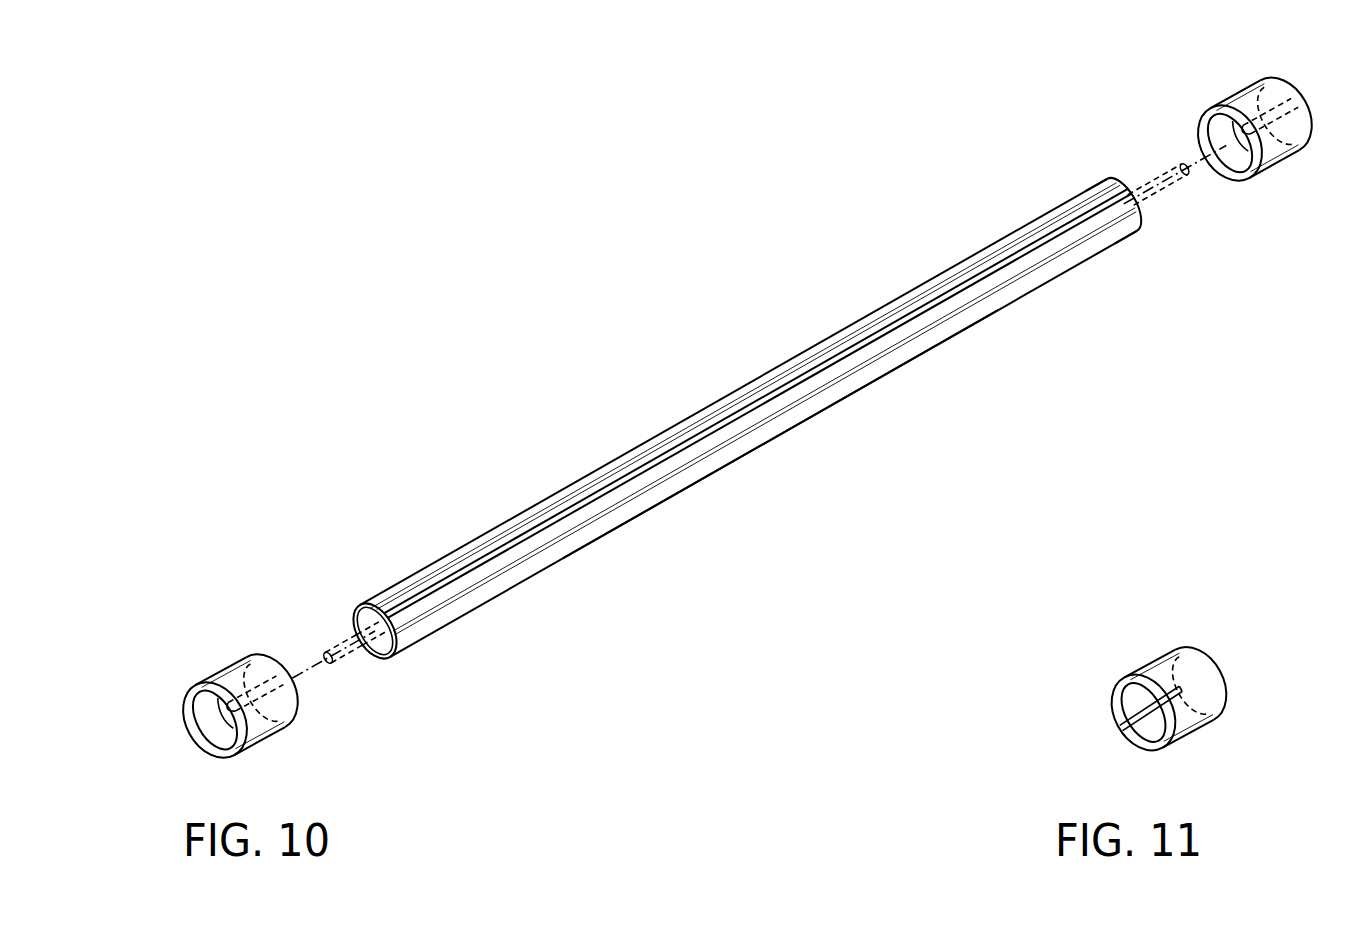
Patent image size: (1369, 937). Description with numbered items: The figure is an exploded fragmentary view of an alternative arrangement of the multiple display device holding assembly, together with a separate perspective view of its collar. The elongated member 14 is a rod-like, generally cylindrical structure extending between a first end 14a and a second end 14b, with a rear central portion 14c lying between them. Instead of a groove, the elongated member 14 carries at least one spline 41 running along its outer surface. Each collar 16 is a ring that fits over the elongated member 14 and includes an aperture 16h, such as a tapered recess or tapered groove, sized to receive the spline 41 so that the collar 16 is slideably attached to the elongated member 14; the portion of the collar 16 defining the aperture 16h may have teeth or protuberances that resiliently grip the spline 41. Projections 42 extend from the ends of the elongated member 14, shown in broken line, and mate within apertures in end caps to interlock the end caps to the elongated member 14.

In FIG. 10, the elongated member 14 is at (725, 427).
In FIG. 10, the first end 14a is at (1110, 188).
In FIG. 10, the second end 14b is at (372, 603).
In FIG. 10, the rear central portion 14c is at (645, 510).
In FIG. 10, the spline 41 is at (645, 466).
In FIG. 10, the projection 42 is at (330, 642).
In FIG. 10, the collar 16 is at (752, 406).
In FIG. 11, the collar 16 is at (1132, 712).
In FIG. 10, the aperture 16h is at (240, 728).
In FIG. 11, the aperture 16h is at (1133, 735).